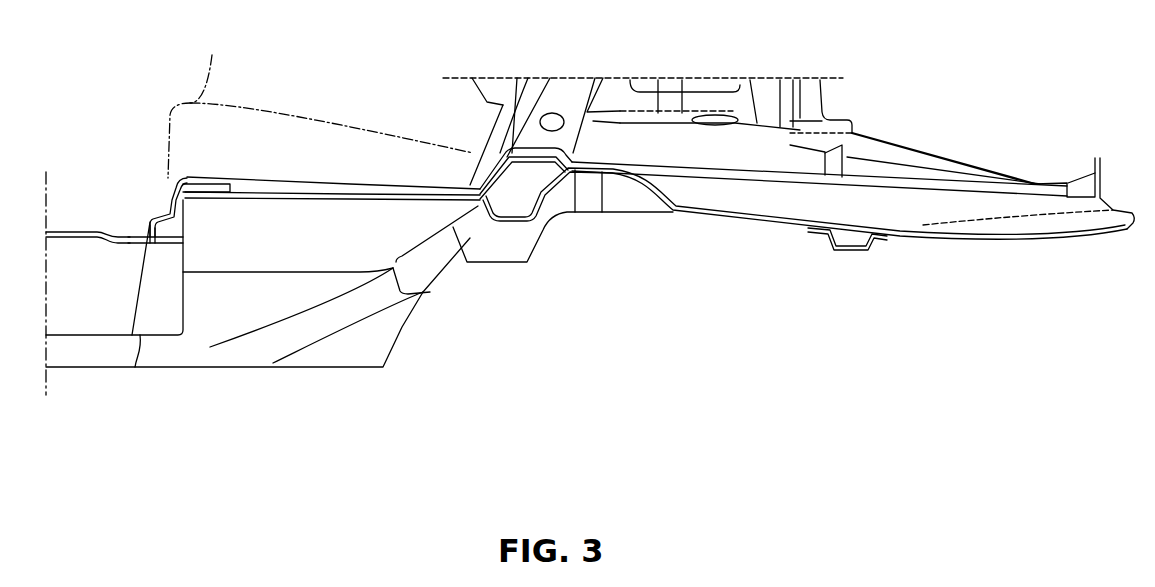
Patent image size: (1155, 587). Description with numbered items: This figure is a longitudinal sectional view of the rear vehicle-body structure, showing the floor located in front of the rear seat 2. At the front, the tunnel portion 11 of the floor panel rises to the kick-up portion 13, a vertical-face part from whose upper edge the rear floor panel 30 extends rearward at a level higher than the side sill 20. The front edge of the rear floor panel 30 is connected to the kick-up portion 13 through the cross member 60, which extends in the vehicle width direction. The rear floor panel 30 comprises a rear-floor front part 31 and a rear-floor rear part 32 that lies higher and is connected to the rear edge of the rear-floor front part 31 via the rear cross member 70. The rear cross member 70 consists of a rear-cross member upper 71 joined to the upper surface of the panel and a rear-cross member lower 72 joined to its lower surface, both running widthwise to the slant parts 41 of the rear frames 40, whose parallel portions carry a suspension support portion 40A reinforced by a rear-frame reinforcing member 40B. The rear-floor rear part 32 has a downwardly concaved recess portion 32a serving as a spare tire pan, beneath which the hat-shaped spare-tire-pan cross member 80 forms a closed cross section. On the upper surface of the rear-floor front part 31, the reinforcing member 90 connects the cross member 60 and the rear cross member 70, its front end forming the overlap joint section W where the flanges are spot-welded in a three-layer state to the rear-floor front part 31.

The rear seat 2 is at (320, 104).
The overlap joint section W is at (215, 160).
The reinforcing member 90 is at (262, 168).
The kick-up portion 13 is at (150, 168).
The cross member 60 is at (140, 211).
The tunnel portion 11 is at (74, 233).
The rear-cross member upper 71 is at (484, 187).
The rear cross member 70 is at (545, 140).
The rear-frame reinforcing member 40B is at (662, 130).
The suspension support portion 40A is at (713, 110).
The rear frame 40 is at (905, 160).
The slant part 41 is at (945, 165).
The rear-cross member lower 72 is at (541, 204).
The recess portion 32a is at (910, 223).
The spare-tire-pan cross member 80 is at (847, 252).
The rear-floor front part 31 is at (367, 200).
The rear-floor rear part 32 is at (697, 218).
The rear floor panel 30 is at (627, 343).
The side sill 20 is at (395, 353).